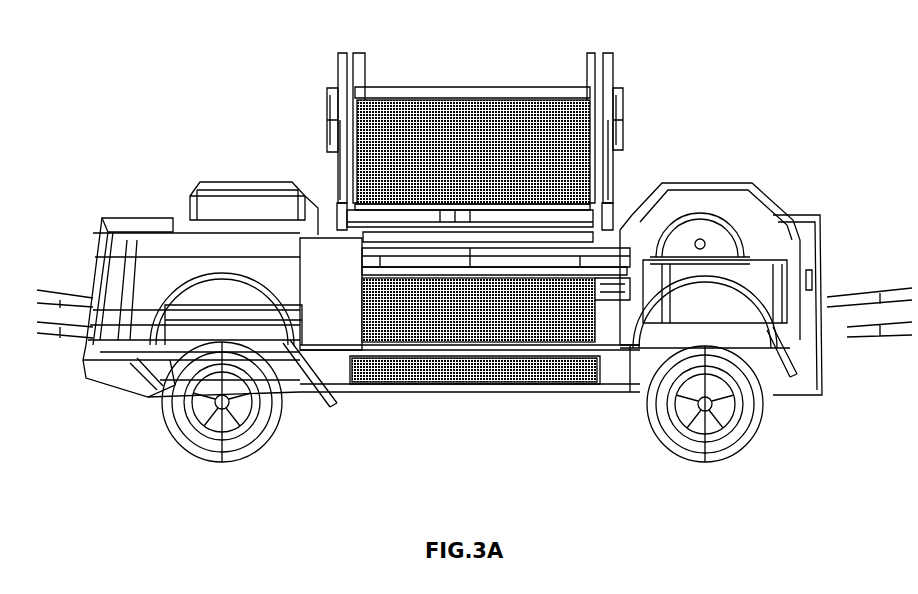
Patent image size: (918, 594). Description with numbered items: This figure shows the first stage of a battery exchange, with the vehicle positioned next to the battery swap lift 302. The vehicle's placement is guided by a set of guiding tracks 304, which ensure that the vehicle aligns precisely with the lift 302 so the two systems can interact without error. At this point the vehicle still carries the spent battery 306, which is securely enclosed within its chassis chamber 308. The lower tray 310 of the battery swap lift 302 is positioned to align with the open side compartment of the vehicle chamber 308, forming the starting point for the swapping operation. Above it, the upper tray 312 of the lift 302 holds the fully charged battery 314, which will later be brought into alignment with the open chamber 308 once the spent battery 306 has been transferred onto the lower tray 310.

The battery swap lift 302 is at (335, 136).
The guiding tracks 304 is at (878, 297).
The spent battery 306 is at (412, 370).
The chassis chamber 308 is at (353, 378).
The lower tray 310 is at (613, 237).
The upper tray 312 is at (590, 165).
The fully charged battery 314 is at (420, 148).